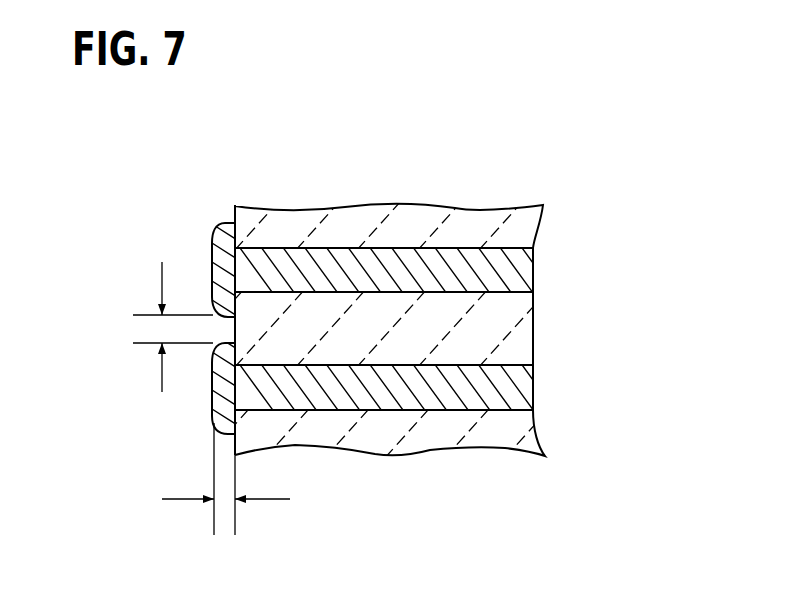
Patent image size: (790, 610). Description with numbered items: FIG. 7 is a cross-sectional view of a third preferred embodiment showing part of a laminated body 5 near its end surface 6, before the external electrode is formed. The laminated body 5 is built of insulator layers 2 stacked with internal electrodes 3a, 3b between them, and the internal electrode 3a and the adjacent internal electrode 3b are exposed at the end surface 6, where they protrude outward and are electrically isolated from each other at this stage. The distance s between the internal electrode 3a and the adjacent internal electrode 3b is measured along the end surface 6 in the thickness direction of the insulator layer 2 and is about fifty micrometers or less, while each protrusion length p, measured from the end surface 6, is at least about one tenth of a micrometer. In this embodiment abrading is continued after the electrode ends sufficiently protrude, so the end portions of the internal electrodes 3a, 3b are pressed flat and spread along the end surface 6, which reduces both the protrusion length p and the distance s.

The laminated body 5 is at (500, 207).
The insulator layer 2 is at (375, 425).
The internal electrode 3a is at (530, 266).
The internal electrode 3b is at (530, 380).
The end surface 6 is at (233, 215).
The distance s is at (160, 285).
The protrusion length p is at (175, 499).